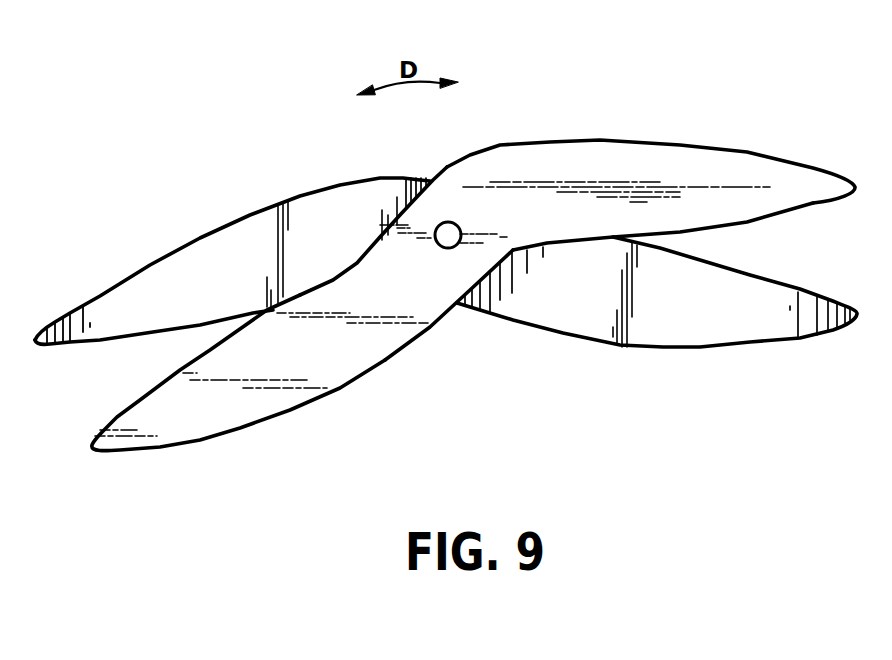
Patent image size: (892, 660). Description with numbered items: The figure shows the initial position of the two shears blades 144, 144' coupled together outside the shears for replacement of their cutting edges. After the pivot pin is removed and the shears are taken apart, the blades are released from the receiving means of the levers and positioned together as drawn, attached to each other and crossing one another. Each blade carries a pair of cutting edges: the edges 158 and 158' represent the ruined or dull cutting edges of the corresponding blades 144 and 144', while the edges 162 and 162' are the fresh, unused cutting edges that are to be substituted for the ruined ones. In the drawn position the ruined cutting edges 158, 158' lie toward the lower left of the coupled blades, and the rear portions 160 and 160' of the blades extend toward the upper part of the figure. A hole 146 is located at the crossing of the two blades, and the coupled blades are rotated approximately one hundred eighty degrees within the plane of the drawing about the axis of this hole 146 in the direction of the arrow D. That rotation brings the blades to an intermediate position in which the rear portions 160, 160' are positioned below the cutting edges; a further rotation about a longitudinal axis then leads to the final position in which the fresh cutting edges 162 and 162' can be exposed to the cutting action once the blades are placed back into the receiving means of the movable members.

The blade 144 is at (373, 210).
The blade 144' is at (464, 318).
The hole 146 is at (450, 228).
The cutting edge 158 is at (232, 343).
The cutting edge 158' is at (221, 373).
The rear portion 160 is at (232, 257).
The rear portion 160' is at (651, 154).
The cutting edge 162 is at (657, 292).
The cutting edge 162' is at (663, 226).